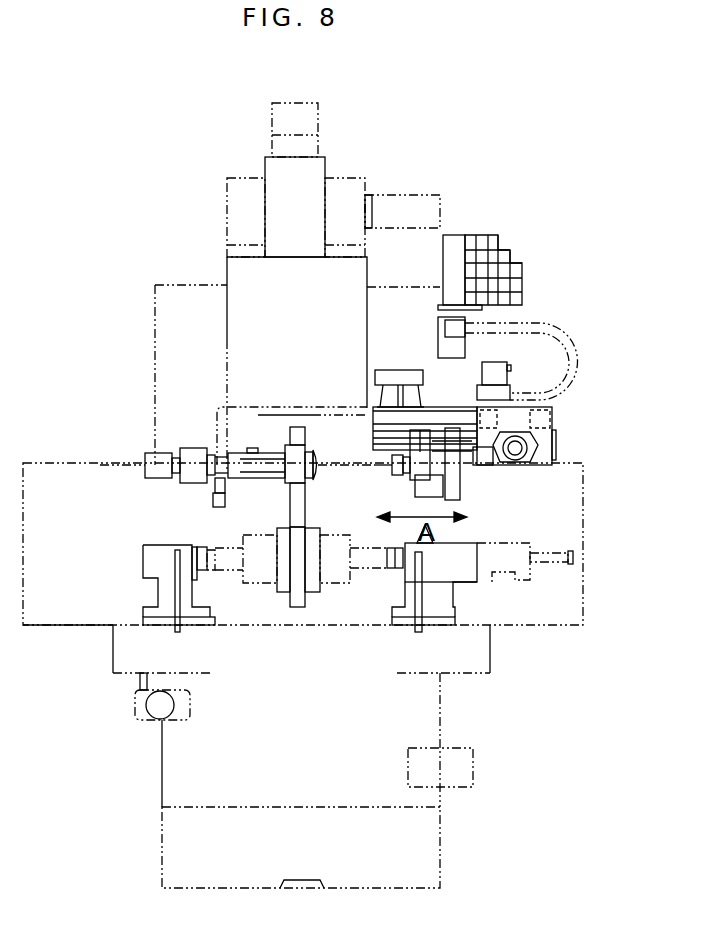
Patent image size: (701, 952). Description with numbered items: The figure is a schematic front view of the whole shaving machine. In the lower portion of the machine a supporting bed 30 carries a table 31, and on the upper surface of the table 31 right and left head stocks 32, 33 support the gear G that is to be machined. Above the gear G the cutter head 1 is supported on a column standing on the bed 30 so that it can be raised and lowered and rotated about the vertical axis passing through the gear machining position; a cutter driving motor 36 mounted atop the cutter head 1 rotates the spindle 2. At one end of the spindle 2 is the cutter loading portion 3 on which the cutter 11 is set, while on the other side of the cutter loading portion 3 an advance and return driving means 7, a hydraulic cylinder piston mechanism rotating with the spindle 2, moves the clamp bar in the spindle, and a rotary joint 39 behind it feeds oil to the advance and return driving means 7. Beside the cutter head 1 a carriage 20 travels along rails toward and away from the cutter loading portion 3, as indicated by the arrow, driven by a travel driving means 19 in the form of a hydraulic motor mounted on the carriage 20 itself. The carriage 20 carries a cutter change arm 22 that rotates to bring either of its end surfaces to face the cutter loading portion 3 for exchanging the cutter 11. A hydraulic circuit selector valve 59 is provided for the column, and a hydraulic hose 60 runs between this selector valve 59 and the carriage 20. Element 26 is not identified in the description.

The cutter head 1 is at (263, 300).
The spindle 2 is at (272, 460).
The cutter loading portion 3 is at (285, 445).
The advance and return driving means 7 is at (195, 450).
The cutter 11 is at (293, 430).
The travel driving means 19 is at (535, 450).
The carriage 20 is at (520, 420).
The cutter change arm 22 is at (448, 395).
The measuring head 26 is at (405, 372).
The supporting bed 30 is at (430, 845).
The table 31 is at (125, 652).
The head stock 32 is at (187, 553).
The head stock 33 is at (448, 558).
The cutter driving motor 36 is at (298, 197).
The rotary joint 39 is at (153, 453).
The hydraulic circuit selector valve 59 is at (532, 262).
The hydraulic hose 60 is at (568, 342).
The gear G is at (296, 605).